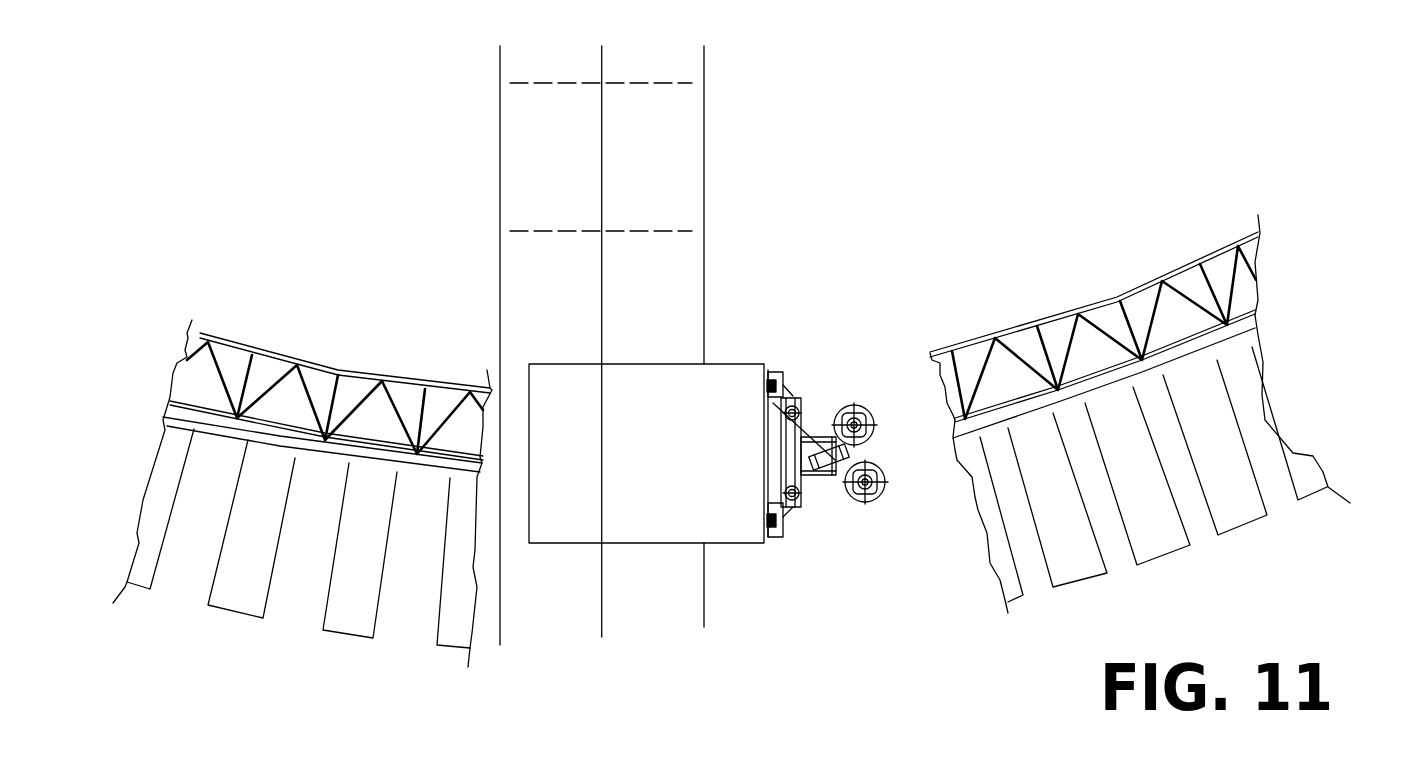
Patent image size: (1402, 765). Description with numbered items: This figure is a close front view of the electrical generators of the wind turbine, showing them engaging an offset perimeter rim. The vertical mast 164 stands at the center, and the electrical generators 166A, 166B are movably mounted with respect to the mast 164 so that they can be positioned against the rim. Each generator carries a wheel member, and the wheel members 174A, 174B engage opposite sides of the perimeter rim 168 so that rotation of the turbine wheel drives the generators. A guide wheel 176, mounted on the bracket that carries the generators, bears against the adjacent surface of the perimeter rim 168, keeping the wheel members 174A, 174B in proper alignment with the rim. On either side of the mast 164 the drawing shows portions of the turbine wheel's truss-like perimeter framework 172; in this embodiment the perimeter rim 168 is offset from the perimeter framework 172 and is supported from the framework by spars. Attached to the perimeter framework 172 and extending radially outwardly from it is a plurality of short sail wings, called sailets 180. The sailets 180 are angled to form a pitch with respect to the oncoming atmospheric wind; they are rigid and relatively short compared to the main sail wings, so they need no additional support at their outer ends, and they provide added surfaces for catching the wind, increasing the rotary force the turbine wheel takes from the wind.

The mast 164 is at (687, 255).
The electrical generator 166A is at (835, 418).
The electrical generator 166B is at (847, 487).
The perimeter rim 168 is at (1237, 332).
The perimeter framework 172 is at (1187, 265).
The wheel member 174A is at (878, 388).
The wheel member 174B is at (885, 495).
The guide wheel 176 is at (767, 367).
The sailets 180 is at (360, 622).